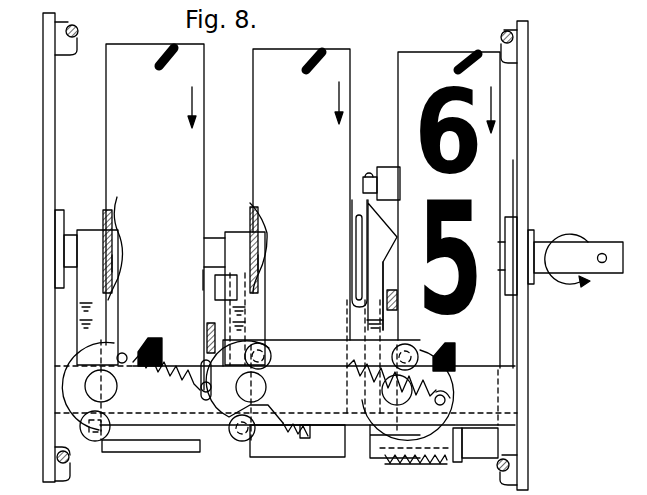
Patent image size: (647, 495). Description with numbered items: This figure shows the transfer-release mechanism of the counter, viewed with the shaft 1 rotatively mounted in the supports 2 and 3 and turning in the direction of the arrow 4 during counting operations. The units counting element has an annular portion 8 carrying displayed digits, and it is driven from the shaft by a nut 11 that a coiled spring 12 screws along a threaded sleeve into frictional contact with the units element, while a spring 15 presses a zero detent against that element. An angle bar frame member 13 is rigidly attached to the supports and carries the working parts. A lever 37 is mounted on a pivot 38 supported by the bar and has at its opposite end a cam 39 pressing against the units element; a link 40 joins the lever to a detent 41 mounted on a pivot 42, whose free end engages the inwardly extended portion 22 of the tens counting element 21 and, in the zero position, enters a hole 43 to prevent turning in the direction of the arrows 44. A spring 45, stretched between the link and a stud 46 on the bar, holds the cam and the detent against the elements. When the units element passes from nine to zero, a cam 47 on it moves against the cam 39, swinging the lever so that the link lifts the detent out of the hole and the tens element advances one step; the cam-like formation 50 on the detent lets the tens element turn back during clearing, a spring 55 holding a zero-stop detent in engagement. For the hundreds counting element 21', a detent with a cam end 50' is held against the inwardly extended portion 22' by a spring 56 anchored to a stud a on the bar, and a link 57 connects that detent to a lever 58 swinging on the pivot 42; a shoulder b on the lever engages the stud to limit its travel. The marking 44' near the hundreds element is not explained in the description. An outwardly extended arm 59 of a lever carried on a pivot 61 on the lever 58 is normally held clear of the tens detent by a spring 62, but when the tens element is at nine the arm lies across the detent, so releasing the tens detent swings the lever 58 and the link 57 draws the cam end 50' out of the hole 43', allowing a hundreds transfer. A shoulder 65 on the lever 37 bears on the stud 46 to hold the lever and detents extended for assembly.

The shaft 1 is at (613, 271).
The support 2 is at (522, 207).
The support 3 is at (44, 158).
The arrow 4 is at (560, 255).
The annular portion of units counting element 8 is at (508, 163).
The nut 11 is at (353, 199).
The coiled spring 12 is at (356, 232).
The angle bar frame member 13 is at (505, 398).
The spring 15 is at (432, 462).
The tens counting element 21 is at (285, 198).
The hundreds counting element 21' is at (138, 217).
The inwardly extended portion 22 is at (258, 248).
The inwardly extended portion 22' is at (125, 241).
The lever 37 is at (385, 277).
The pivot 38 is at (383, 395).
The cam 39 is at (395, 230).
The link 40 is at (326, 358).
The detent 41 is at (245, 320).
The pivot 42 is at (116, 386).
The hole 43 is at (279, 267).
The hole 43' is at (135, 265).
The arrows 44 is at (341, 107).
The stop teeth 44' is at (72, 316).
The spring 45 is at (372, 383).
The stud 46 is at (446, 403).
The cam 47 is at (393, 322).
The cam-like formation 50 is at (244, 250).
The cam end 50' is at (95, 243).
The spring 55 is at (293, 436).
The spring 56 is at (165, 382).
The link 57 is at (176, 432).
The lever 58 is at (263, 432).
The outwardly extended arm 59 is at (237, 310).
The pivot 61 is at (203, 278).
The spring 62 is at (207, 333).
The shoulder 65 is at (450, 398).
The stud a is at (205, 381).
The shoulder b is at (207, 405).